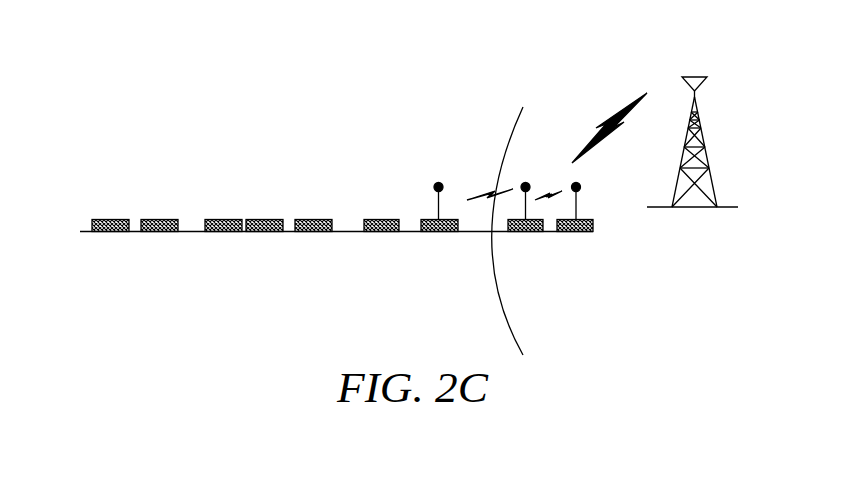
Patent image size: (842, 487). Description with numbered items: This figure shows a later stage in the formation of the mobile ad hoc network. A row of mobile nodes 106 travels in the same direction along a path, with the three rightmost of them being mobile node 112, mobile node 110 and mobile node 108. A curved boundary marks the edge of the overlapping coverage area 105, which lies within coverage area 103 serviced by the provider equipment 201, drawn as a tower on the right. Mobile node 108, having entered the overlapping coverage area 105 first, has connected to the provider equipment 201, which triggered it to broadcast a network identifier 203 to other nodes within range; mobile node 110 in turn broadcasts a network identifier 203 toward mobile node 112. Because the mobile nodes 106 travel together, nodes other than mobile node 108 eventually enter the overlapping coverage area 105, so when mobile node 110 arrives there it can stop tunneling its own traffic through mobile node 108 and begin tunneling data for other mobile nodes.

The coverage area 103 is at (516, 116).
The overlapping coverage area 105 is at (561, 312).
The mobile nodes 106 is at (213, 157).
The mobile node 108 is at (576, 232).
The mobile node 110 is at (526, 232).
The mobile node 112 is at (438, 232).
The provider equipment 201 is at (706, 75).
The network identifier 203 is at (474, 196).